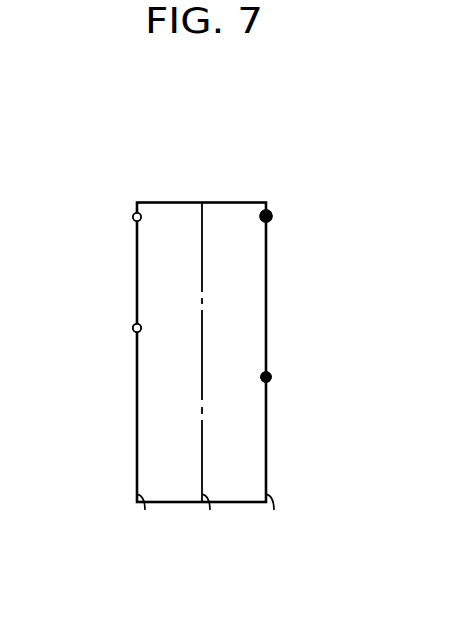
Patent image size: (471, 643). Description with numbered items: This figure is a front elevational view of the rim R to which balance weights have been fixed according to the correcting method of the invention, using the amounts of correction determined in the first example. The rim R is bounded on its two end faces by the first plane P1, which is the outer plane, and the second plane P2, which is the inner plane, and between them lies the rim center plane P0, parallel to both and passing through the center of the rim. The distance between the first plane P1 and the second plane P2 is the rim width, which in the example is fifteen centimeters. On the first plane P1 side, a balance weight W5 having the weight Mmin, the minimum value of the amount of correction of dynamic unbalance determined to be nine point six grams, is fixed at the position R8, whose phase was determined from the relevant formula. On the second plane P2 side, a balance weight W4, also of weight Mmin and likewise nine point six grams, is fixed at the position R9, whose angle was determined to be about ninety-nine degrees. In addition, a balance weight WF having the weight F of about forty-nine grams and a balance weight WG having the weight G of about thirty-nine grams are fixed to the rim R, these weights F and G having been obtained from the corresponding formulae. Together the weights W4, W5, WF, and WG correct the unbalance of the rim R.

The rim R is at (143, 443).
The weight F is at (122, 234).
The weight G is at (278, 230).
The balance weight WF is at (133, 216).
The balance weight WG is at (271, 212).
The minimum value of the amount of correction of dynamic unbalance Mmin is at (200, 353).
The position R8 is at (152, 350).
The position R9 is at (251, 386).
The balance weight W5 is at (133, 333).
The balance weight W4 is at (268, 383).
The first plane P1 is at (154, 527).
The rim center plane P0 is at (219, 527).
The second plane P2 is at (283, 527).